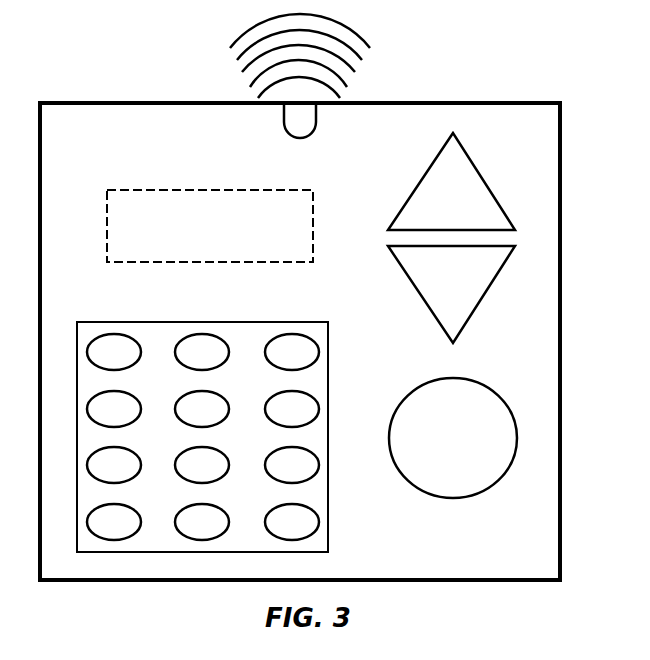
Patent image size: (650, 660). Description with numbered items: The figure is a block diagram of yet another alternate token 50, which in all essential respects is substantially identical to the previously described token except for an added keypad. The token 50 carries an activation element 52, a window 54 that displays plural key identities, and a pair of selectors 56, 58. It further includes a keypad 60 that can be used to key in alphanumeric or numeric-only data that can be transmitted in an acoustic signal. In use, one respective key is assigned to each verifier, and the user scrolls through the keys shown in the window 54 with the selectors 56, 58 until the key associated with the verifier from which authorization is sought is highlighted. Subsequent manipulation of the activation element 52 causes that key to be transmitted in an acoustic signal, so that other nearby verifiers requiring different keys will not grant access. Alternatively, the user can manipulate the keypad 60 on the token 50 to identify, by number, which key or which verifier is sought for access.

The token 50 is at (100, 103).
The activation element 52 is at (447, 498).
The window 54 is at (314, 221).
The selector 56 is at (480, 172).
The selector 58 is at (468, 320).
The keypad 60 is at (328, 537).